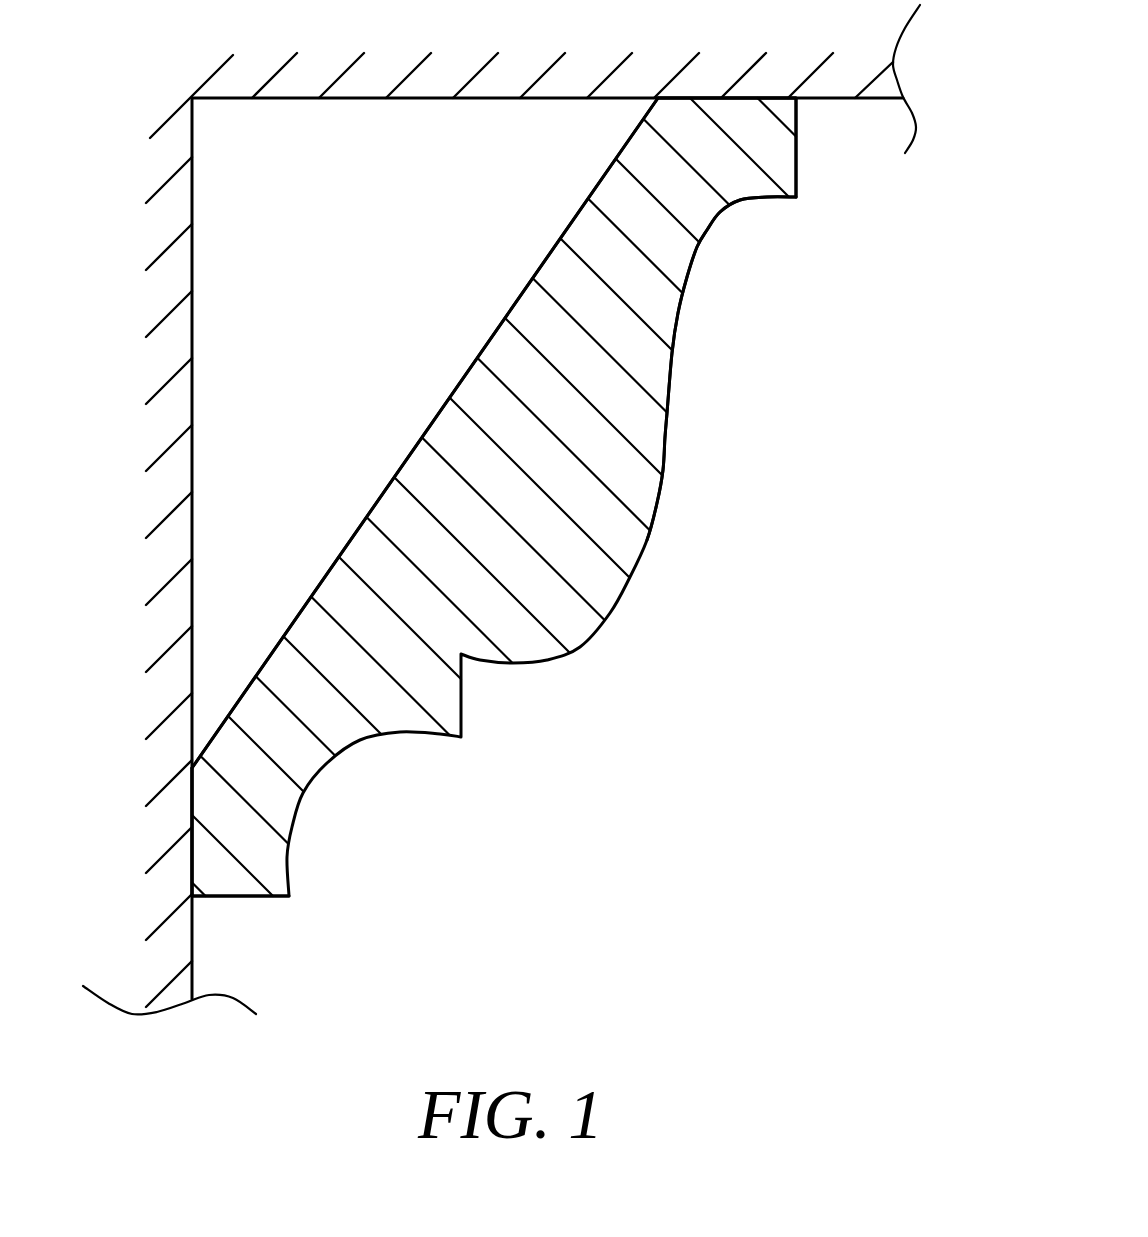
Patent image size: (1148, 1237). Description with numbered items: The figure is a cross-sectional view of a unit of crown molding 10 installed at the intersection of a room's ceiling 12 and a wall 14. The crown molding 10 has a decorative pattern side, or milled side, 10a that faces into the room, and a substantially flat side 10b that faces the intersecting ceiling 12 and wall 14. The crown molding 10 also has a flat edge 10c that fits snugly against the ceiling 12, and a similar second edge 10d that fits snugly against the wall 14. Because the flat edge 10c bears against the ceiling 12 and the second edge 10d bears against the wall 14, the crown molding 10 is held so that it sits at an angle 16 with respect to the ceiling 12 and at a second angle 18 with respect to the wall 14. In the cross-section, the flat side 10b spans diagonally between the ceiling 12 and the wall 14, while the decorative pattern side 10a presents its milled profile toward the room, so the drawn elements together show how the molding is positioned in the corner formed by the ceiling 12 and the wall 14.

The crown molding 10 is at (621, 538).
The decorative pattern side 10a is at (712, 329).
The flat side 10b is at (437, 422).
The flat edge 10c is at (773, 162).
The second edge 10d is at (233, 881).
The ceiling 12 is at (573, 97).
The wall 14 is at (192, 420).
The angle 16 is at (624, 142).
The second angle 18 is at (240, 680).